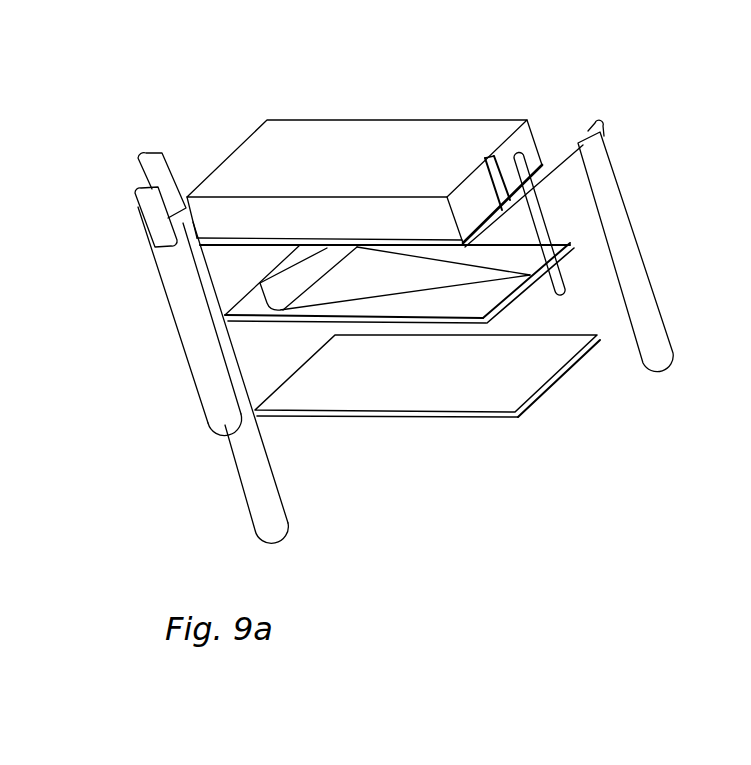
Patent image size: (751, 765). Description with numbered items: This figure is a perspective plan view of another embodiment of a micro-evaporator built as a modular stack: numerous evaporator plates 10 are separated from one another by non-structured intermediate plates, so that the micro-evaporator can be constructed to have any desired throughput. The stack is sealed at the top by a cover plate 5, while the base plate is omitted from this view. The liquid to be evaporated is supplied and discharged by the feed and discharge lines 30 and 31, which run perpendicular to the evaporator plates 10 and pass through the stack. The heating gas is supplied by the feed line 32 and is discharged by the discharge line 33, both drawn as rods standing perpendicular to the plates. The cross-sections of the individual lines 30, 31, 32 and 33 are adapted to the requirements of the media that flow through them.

The cover plate 5 is at (364, 141).
The evaporator plate 10 is at (463, 220).
The feed line 30 is at (596, 161).
The discharge line 31 is at (254, 348).
The feed line 32 is at (653, 252).
The discharge line 33 is at (183, 311).